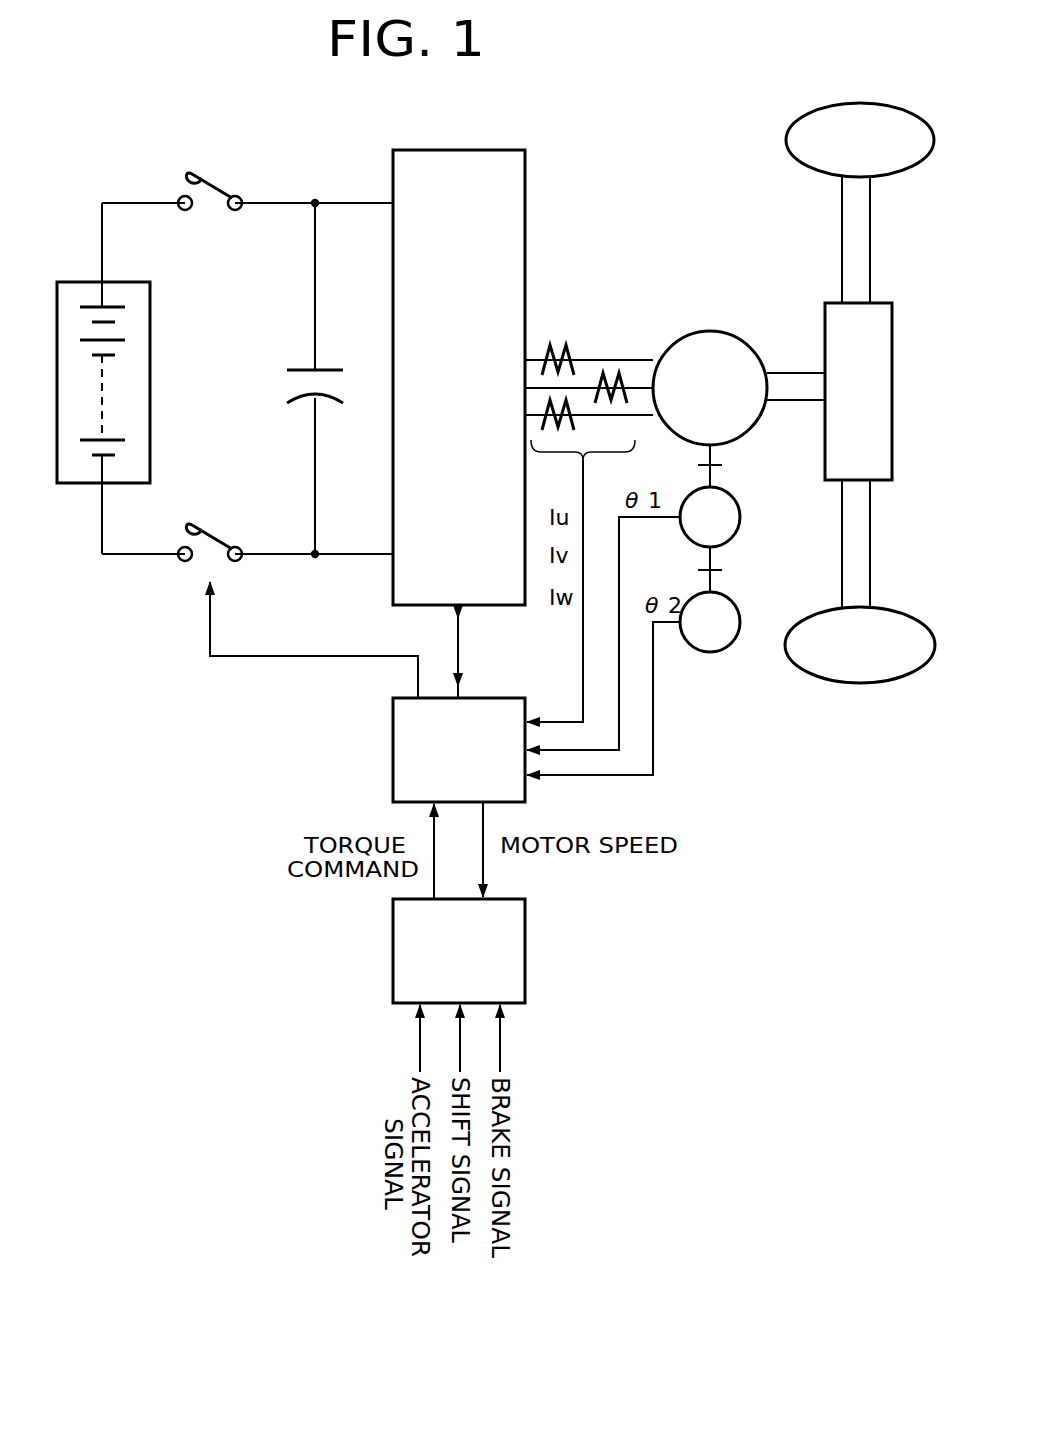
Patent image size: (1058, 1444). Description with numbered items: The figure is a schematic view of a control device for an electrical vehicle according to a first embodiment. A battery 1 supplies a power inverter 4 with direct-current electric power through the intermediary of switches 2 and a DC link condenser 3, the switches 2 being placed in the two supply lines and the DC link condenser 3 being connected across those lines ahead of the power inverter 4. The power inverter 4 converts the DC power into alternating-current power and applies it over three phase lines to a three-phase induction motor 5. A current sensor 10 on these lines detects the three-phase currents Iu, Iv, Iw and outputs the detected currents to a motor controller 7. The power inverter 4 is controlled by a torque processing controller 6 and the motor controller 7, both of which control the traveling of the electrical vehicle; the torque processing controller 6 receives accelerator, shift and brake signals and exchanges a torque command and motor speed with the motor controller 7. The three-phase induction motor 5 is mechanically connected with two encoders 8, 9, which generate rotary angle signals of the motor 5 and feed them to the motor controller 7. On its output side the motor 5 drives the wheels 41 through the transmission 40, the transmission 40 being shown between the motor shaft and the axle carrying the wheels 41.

The battery 1 is at (150, 340).
The switches 2 is at (222, 190).
The DC link condenser 3 is at (297, 372).
The power inverter 4 is at (525, 207).
The three-phase induction motor 5 is at (745, 355).
The torque processing controller 6 is at (393, 957).
The motor controller 7 is at (393, 757).
The encoder 8 is at (738, 500).
The encoder 9 is at (738, 605).
The current sensor 10 is at (567, 336).
The transmission 40 is at (880, 303).
The wheels 41 is at (848, 104).